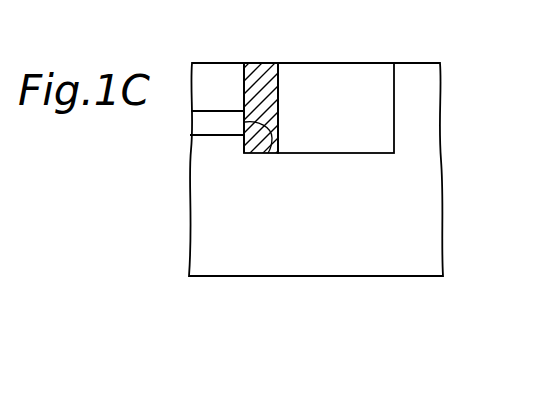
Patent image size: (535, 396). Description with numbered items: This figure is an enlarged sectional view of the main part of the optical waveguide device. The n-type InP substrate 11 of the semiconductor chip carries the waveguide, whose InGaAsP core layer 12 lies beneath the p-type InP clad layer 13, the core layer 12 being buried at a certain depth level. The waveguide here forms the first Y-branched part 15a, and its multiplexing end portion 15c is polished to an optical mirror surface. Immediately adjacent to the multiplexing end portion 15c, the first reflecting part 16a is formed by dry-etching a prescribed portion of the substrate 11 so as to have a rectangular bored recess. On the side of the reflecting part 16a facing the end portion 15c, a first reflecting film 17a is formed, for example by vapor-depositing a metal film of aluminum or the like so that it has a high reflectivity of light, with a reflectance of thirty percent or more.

The n-type InP substrate 11 is at (357, 233).
The InGaAsP core layer 12 is at (220, 128).
The p-type InP clad layer 13 is at (223, 93).
The first Y-branched part 15a is at (208, 68).
The multiplexing end portion 15c is at (268, 153).
The first reflecting part 16a is at (345, 90).
The first reflecting film 17a is at (268, 78).